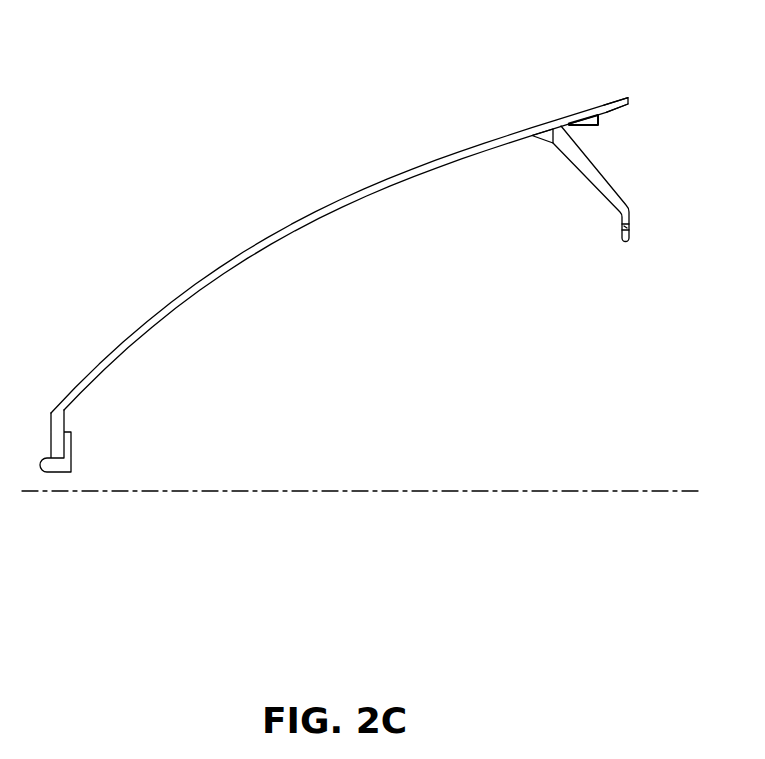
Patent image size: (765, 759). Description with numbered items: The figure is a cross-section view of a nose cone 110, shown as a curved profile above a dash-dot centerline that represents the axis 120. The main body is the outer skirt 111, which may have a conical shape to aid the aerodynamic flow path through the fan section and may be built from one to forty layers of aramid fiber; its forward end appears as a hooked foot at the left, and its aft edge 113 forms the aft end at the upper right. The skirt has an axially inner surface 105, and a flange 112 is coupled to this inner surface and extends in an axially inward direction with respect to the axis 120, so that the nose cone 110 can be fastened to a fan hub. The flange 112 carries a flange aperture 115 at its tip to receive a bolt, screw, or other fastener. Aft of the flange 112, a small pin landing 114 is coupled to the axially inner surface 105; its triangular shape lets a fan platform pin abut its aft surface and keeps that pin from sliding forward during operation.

The nose cone 110 is at (127, 131).
The axially inner surface 105 is at (338, 210).
The outer skirt 111 is at (187, 290).
The flange 112 is at (610, 205).
The aft edge 113 is at (625, 97).
The pin landing 114 is at (594, 120).
The flange aperture 115 is at (630, 238).
The axis 120 is at (23, 492).